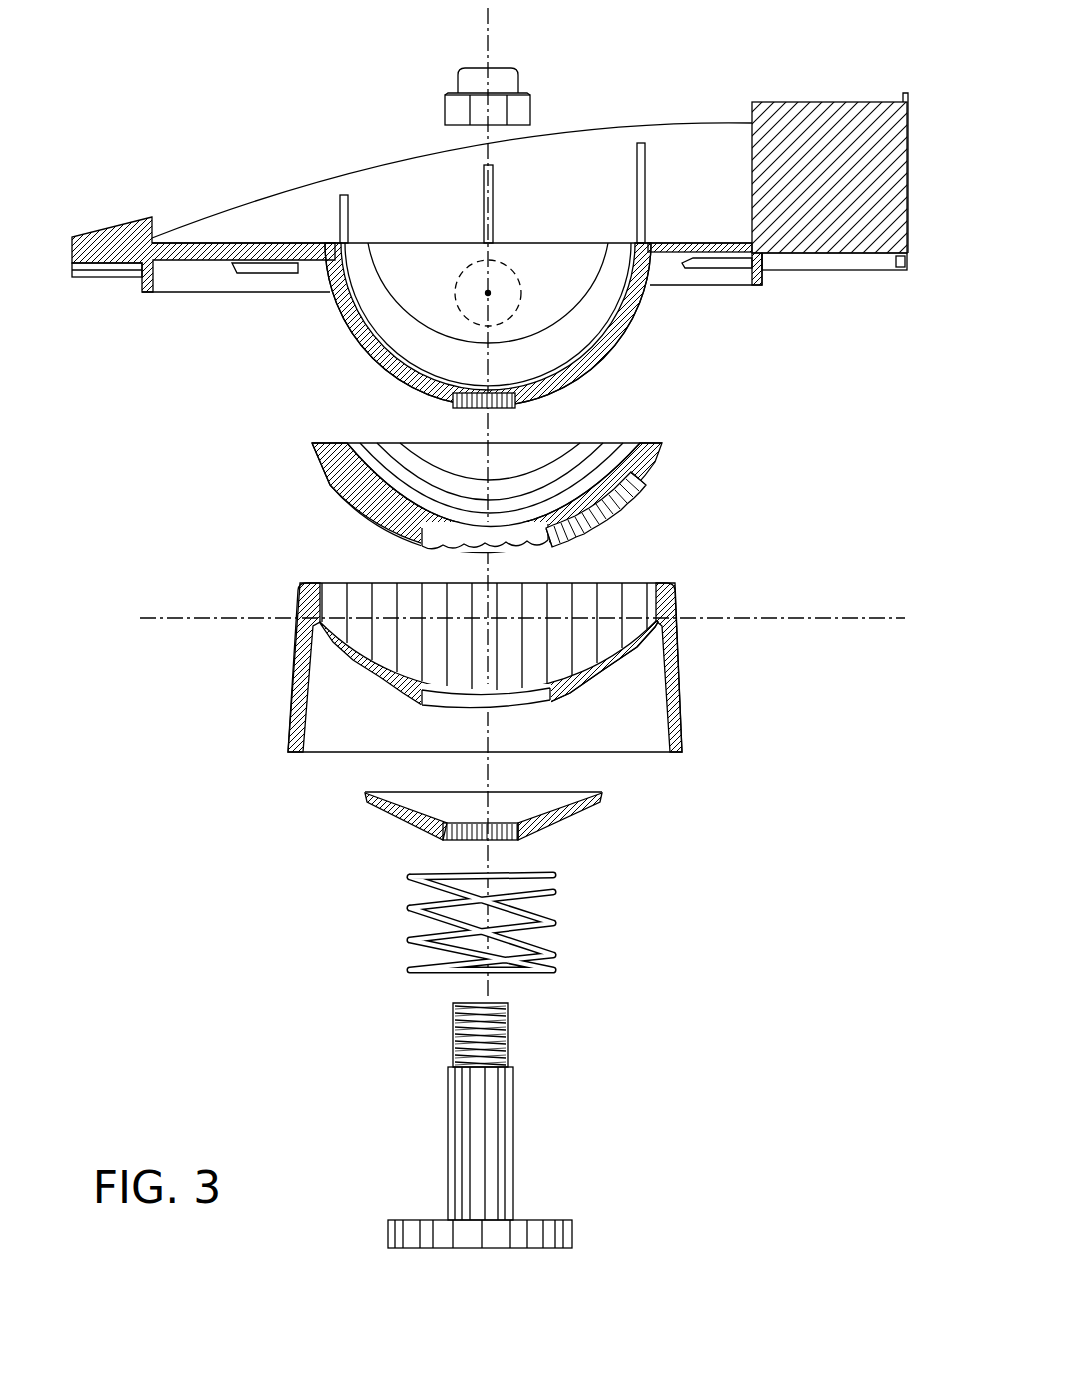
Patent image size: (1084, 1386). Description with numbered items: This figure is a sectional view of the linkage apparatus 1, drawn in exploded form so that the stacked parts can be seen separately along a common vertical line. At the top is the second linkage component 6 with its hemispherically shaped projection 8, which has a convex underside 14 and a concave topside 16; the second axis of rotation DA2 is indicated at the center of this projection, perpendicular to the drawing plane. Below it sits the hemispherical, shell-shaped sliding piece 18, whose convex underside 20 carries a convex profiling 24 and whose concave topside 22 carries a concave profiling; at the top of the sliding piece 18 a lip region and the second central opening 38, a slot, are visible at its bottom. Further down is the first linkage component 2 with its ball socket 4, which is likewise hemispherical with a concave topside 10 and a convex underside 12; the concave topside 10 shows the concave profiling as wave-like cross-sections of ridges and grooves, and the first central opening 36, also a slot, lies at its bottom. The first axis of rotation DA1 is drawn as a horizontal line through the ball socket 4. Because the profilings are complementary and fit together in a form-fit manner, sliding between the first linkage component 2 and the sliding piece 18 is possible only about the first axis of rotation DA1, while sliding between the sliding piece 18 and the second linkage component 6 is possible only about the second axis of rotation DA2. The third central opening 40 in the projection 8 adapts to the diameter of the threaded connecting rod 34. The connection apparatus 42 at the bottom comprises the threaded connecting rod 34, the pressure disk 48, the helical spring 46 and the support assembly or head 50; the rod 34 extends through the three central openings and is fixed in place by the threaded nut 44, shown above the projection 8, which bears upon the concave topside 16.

The linkage apparatus 1 is at (697, 95).
The first linkage component 2 is at (740, 660).
The ball socket 4 is at (298, 598).
The second linkage component 6 is at (935, 130).
The hemispherically shaped projection 8 is at (642, 326).
The concave topside 10 is at (618, 640).
The convex underside 12 is at (622, 663).
The convex underside 14 is at (618, 352).
The concave topside 16 is at (368, 318).
The sliding piece 18 is at (680, 460).
The convex underside 20 is at (330, 477).
The concave topside 22 is at (343, 443).
The convex profiling 24 is at (356, 347).
The threaded connecting rod 34 is at (517, 1137).
The first central opening 36 is at (503, 692).
The second central opening 38 is at (460, 547).
The third central opening 40 is at (477, 404).
The connection apparatus 42 is at (605, 1160).
The threaded nut 44 is at (445, 108).
The helical spring 46 is at (553, 955).
The pressure disk 48 is at (573, 820).
The support assembly or head 50 is at (572, 1233).
The first axis of rotation DA1 is at (232, 622).
The second axis of rotation DA2 is at (488, 293).